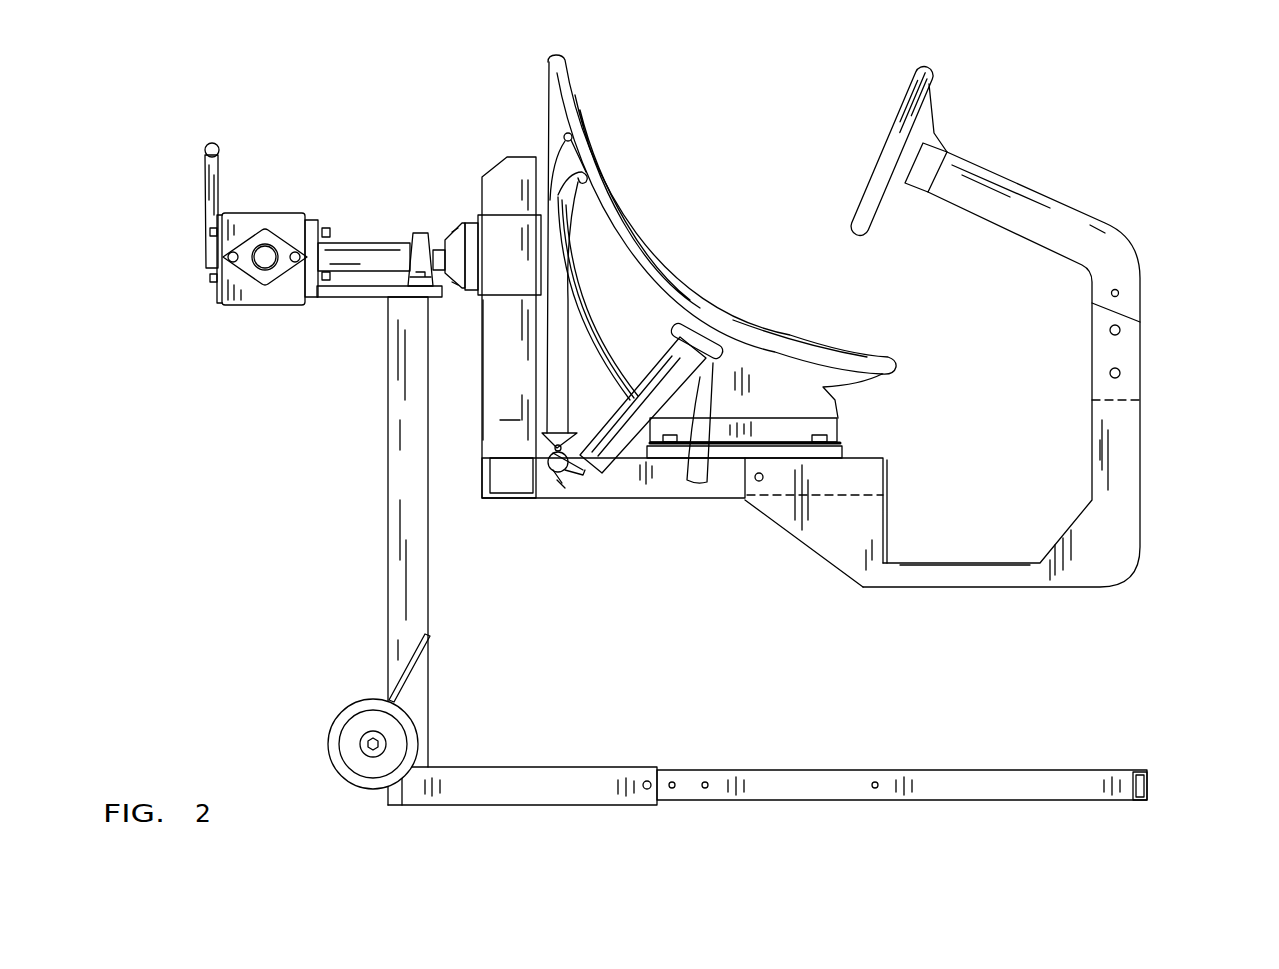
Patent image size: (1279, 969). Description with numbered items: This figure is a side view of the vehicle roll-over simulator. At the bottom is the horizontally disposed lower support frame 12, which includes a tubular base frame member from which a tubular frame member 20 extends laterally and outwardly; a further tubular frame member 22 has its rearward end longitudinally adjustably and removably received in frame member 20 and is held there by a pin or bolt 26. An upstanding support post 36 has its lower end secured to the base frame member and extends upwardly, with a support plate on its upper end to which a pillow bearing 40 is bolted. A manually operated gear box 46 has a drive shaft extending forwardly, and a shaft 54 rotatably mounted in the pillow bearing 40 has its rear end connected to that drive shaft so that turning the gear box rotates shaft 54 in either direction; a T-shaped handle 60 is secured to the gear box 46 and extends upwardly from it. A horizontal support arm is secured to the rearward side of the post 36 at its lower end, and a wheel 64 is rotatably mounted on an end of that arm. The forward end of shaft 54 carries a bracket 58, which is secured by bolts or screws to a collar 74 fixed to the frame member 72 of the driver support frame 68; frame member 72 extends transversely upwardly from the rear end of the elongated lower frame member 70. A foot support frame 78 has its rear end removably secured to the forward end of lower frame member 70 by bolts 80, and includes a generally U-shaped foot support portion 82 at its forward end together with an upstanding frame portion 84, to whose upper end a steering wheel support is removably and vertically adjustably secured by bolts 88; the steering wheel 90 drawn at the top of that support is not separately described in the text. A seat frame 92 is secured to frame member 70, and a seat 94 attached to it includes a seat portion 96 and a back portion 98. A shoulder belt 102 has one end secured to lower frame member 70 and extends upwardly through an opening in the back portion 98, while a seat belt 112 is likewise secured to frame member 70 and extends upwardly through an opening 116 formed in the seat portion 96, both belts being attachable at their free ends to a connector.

The lower support frame 12 is at (518, 821).
The tubular frame member 20 is at (542, 773).
The tubular frame member 22 is at (787, 777).
The pin or bolt 26 is at (647, 780).
The upstanding support post 36 is at (382, 548).
The pillow bearing 40 is at (420, 237).
The manually operated gear box 46 is at (288, 210).
The shaft 54 is at (382, 240).
The bracket 58 is at (463, 225).
The T-shaped handle 60 is at (208, 137).
The wheel 64 is at (347, 730).
The driver support frame 68 is at (483, 375).
The lower frame member 70 is at (653, 490).
The frame member 72 is at (503, 428).
The collar 74 is at (525, 258).
The foot support frame 78 is at (900, 500).
The bolts 80 is at (762, 487).
The U-shaped foot support portion 82 is at (977, 563).
The upstanding frame portion 84 is at (1120, 492).
The bolts 88 is at (1120, 372).
The steering wheel 90 is at (885, 160).
The seat frame 92 is at (840, 435).
The seat 94 is at (822, 343).
The seat portion 96 is at (825, 387).
The back portion 98 is at (597, 205).
The shoulder belt 102 is at (560, 340).
The seat belt 112 is at (625, 440).
The opening 116 is at (680, 330).